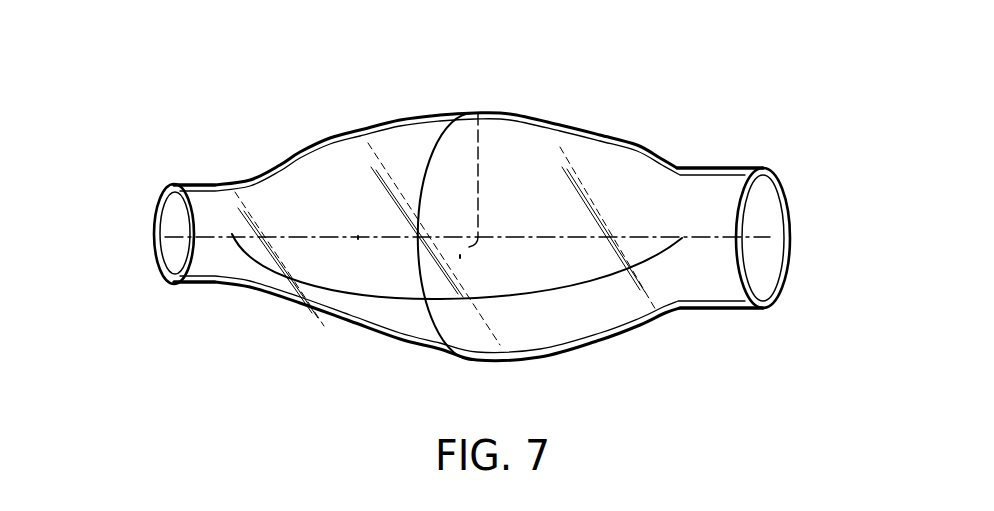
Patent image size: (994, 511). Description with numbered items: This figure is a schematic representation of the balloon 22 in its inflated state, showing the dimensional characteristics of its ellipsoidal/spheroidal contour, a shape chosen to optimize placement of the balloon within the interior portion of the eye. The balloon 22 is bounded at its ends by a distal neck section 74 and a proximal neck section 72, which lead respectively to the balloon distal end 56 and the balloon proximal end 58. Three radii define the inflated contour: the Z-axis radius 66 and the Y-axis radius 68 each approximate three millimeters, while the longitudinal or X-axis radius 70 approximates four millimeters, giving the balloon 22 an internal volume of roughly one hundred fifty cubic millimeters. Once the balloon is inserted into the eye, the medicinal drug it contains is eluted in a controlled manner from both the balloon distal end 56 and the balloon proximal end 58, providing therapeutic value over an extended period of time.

The balloon 22 is at (588, 122).
The balloon distal end 56 is at (156, 208).
The balloon proximal end 58 is at (783, 185).
The Z-axis radius 66 is at (478, 153).
The Y-axis radius 68 is at (458, 256).
The X-axis radius 70 is at (358, 237).
The proximal neck section 72 is at (724, 168).
The distal neck section 74 is at (193, 183).